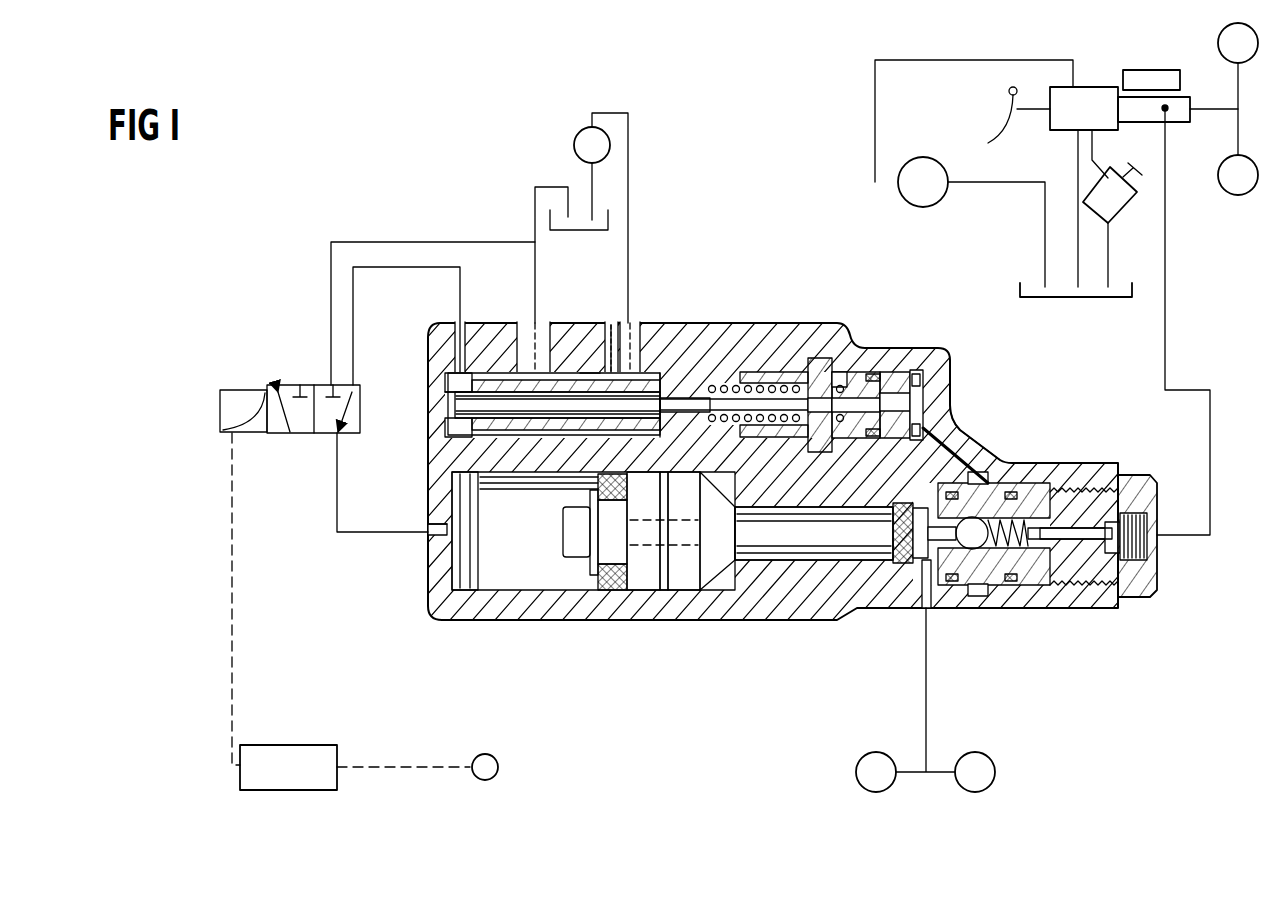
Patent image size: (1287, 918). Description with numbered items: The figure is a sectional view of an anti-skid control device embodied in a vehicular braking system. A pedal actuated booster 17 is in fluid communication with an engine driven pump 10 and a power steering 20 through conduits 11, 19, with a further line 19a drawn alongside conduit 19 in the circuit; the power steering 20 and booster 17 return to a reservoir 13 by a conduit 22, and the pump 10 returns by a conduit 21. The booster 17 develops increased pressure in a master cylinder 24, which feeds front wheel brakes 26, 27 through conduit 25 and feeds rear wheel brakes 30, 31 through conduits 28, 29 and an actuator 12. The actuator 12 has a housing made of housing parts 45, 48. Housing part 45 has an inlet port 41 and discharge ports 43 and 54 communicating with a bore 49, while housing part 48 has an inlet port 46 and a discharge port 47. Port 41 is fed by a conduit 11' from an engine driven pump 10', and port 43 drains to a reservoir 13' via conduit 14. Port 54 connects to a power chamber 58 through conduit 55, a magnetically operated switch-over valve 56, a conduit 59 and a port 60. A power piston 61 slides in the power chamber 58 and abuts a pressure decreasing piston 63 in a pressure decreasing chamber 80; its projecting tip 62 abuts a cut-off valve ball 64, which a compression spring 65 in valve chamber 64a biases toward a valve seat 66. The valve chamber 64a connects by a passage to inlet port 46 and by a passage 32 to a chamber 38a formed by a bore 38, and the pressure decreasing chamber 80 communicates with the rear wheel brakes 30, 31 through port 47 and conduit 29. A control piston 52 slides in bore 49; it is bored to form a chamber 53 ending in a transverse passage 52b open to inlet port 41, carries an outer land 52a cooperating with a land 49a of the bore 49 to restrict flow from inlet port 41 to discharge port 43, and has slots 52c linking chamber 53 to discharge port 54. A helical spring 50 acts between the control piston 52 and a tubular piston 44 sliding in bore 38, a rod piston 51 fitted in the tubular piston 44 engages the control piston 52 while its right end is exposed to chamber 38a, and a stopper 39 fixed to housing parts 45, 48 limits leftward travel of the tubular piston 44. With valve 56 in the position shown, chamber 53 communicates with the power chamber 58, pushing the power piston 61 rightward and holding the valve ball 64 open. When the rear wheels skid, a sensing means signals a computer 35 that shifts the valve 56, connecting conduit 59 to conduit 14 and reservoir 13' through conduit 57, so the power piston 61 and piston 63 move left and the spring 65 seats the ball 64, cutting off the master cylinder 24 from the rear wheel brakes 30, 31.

The engine driven pump 10 is at (923, 161).
The engine driven pump 10' is at (572, 160).
The conduit 11 is at (942, 109).
The conduit 11' is at (642, 218).
The actuator 12 is at (1035, 392).
The reservoir 13 is at (1064, 271).
The reservoir 13' is at (572, 190).
The conduit 14 is at (533, 224).
The pedal actuated booster 17 is at (1090, 87).
The conduit 19 is at (1095, 160).
The return line 19a is at (1076, 178).
The power steering 20 is at (1116, 210).
The conduit 21 is at (1045, 212).
The conduit 22 is at (1108, 250).
The master cylinder 24 is at (1178, 124).
The conduit 25 is at (1222, 108).
The front wheel brake 26 is at (1257, 173).
The front wheel brake 27 is at (1252, 60).
The conduit 28 is at (1211, 450).
The conduit 29 is at (927, 688).
The rear wheel brake 30 is at (870, 792).
The rear wheel brake 31 is at (970, 792).
The passage 32 is at (956, 442).
The computer 35 is at (300, 745).
The bore 38 is at (840, 372).
The chamber 38a is at (916, 370).
The stopper 39 is at (766, 375).
The inlet port 41 is at (632, 348).
The discharge port 43 is at (530, 358).
The tubular piston 44 is at (868, 384).
The housing part 45 is at (490, 614).
The inlet port 46 is at (1146, 548).
The discharge port 47 is at (928, 612).
The housing part 48 is at (984, 456).
The bore 49 is at (450, 438).
The land 49a is at (594, 362).
The helical spring 50 is at (814, 360).
The rod piston 51 is at (728, 399).
The control piston 52 is at (476, 368).
The outer land 52a is at (612, 330).
The transverse passage 52b is at (658, 372).
The slots 52c is at (448, 378).
The chamber 53 is at (455, 404).
The discharge port 54 is at (455, 332).
The conduit 55 is at (355, 335).
The switch-over valve 56 is at (290, 388).
The conduit 57 is at (331, 330).
The power chamber 58 is at (525, 531).
The conduit 59 is at (337, 470).
The port 60 is at (430, 536).
The power piston 61 is at (640, 598).
The projecting tip 62 is at (920, 514).
The pressure decreasing piston 63 is at (776, 593).
The cut-off valve ball 64 is at (972, 594).
The valve chamber 64a is at (982, 484).
The compression spring 65 is at (1032, 522).
The valve seat 66 is at (992, 520).
The pressure decreasing chamber 80 is at (903, 592).